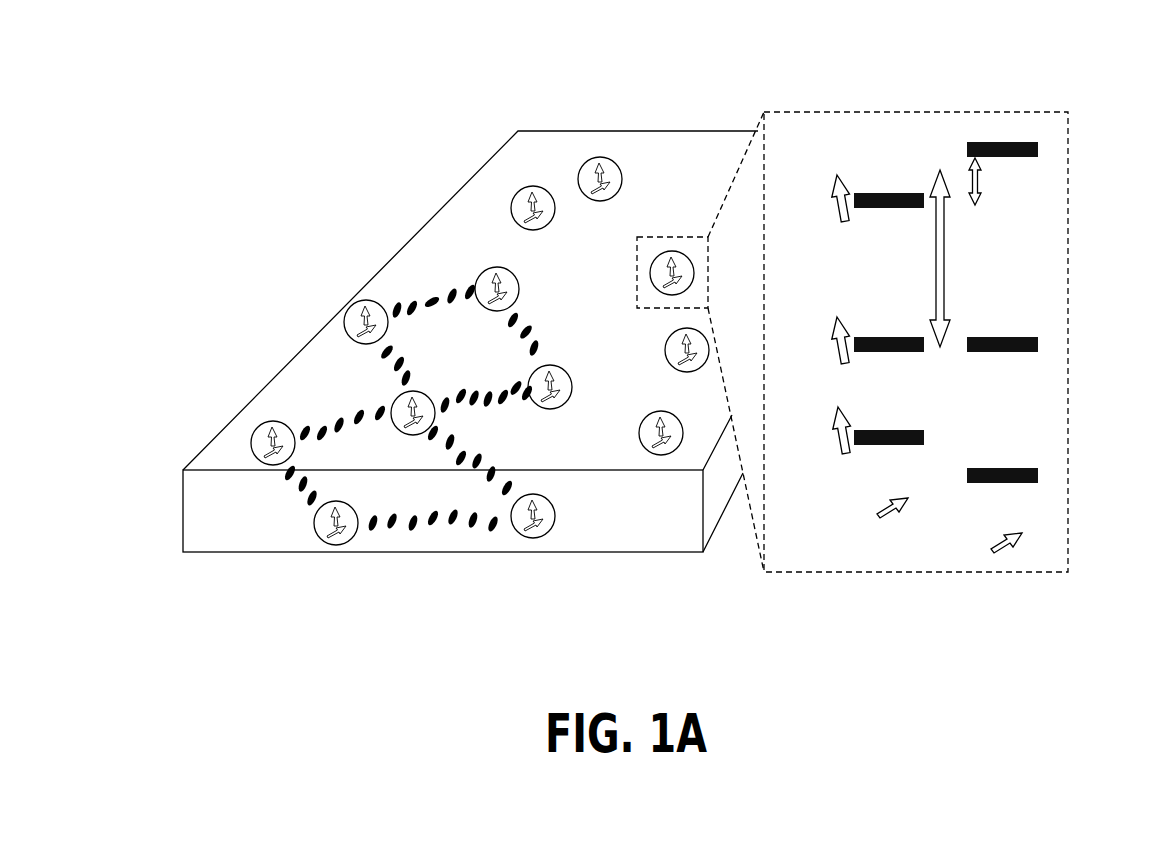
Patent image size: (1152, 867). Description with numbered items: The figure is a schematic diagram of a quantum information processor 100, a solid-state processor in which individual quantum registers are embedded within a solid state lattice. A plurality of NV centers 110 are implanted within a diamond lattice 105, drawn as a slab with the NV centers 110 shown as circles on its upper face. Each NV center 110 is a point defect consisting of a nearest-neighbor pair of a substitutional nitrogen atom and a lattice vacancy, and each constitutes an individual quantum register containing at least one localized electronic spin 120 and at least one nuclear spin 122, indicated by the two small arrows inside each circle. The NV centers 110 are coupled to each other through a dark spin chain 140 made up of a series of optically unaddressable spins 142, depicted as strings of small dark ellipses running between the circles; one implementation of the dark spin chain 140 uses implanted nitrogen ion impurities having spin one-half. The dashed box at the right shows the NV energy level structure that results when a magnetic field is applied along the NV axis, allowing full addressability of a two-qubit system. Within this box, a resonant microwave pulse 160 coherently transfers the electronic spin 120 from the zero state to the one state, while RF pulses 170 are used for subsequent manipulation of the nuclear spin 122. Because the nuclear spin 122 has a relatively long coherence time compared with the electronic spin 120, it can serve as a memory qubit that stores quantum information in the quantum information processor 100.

The quantum information processor 100 is at (751, 54).
The diamond lattice 105 is at (645, 537).
The NV center 110 is at (655, 252).
The electronic spin 120 is at (673, 253).
The nuclear spin 122 is at (360, 334).
The dark spin chain 140 is at (430, 296).
The optically unaddressable spin 142 is at (415, 530).
The resonant microwave pulse 160 is at (945, 242).
The RF pulse 170 is at (967, 170).